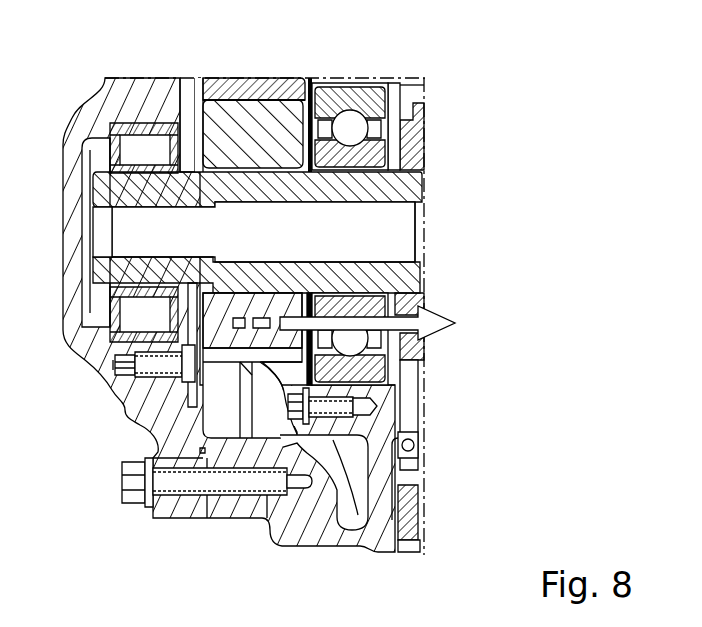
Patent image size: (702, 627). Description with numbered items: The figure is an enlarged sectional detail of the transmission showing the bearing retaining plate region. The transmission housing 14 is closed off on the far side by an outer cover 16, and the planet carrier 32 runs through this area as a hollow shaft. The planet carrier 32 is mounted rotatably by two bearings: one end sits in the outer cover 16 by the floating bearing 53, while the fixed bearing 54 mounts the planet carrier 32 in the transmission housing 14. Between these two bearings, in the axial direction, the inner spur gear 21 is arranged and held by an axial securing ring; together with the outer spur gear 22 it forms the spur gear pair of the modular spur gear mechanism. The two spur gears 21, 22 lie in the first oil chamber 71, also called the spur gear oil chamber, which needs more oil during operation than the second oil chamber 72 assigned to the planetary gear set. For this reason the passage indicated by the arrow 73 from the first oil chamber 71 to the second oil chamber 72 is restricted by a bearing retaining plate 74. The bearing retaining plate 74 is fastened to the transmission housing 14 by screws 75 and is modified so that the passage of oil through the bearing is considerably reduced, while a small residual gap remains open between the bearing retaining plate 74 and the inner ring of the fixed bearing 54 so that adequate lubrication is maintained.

The transmission housing 14 is at (390, 500).
The outer cover 16 is at (80, 345).
The inner spur gear 21 is at (242, 103).
The outer spur gear 22 is at (282, 80).
The planet carrier 32 is at (412, 180).
The floating bearing 53 is at (130, 157).
The fixed bearing 54 is at (348, 83).
The first oil chamber 71 is at (247, 417).
The second oil chamber 72 is at (413, 395).
The arrow 73 is at (430, 312).
The bearing retaining plate 74 is at (378, 364).
The screws 75 is at (240, 372).